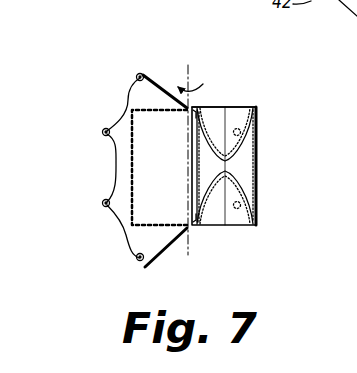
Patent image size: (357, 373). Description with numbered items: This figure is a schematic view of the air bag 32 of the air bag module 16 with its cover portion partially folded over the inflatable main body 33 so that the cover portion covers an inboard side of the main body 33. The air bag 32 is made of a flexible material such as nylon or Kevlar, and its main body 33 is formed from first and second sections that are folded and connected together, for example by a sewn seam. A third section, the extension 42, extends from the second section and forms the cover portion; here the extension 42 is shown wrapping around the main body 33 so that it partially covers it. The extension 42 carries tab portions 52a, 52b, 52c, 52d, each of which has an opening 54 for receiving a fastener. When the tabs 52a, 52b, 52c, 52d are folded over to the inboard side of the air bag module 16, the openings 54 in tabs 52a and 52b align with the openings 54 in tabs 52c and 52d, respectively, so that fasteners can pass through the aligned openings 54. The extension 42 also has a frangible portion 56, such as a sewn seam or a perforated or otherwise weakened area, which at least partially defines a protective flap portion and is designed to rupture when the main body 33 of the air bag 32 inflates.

The air bag module 16 is at (241, 68).
The air bag 32 is at (264, 163).
The main body 33 is at (240, 106).
The extension 42 is at (163, 88).
The tab portion 52a is at (131, 88).
The tab portion 52b is at (170, 247).
The tab portion 52c is at (99, 150).
The tab portion 52d is at (108, 222).
The opening 54 is at (137, 74).
The frangible portion 56 is at (125, 131).